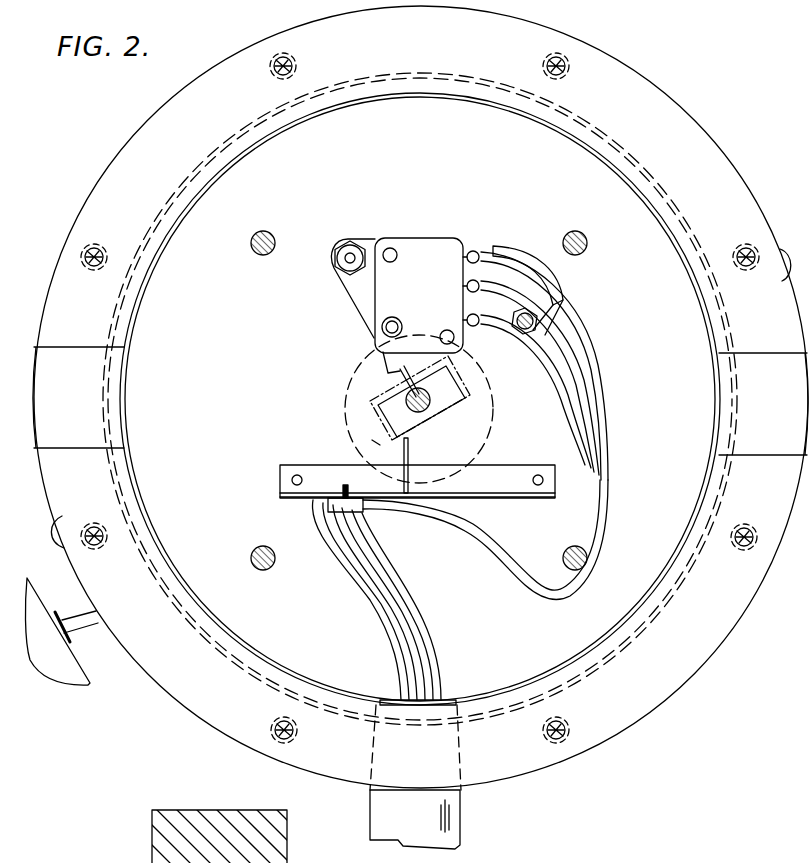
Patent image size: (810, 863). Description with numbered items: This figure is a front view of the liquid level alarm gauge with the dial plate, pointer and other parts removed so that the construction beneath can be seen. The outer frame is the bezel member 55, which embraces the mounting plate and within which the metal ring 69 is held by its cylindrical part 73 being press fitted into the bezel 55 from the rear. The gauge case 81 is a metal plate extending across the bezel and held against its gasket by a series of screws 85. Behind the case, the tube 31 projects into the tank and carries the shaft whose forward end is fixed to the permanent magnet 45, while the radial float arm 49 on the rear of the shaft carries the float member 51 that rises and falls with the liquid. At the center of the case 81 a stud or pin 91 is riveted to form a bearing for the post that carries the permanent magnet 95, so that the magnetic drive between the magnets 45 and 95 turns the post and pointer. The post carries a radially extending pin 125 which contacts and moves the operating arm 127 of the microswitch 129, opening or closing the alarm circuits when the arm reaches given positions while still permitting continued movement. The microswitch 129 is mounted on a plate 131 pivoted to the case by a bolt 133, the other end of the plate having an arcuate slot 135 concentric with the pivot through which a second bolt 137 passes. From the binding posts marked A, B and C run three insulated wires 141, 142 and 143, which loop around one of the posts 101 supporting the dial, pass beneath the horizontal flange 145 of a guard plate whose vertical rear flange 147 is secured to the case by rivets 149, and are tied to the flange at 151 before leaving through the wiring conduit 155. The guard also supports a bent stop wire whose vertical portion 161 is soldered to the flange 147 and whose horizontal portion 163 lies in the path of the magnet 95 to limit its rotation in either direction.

The tube 31 is at (345, 429).
The permanent magnet 45 is at (485, 398).
The radial float arm 49 is at (86, 622).
The float member 51 is at (70, 688).
The bezel member 55 is at (680, 128).
The metal ring 69 is at (356, 94).
The cylindrical part 73 is at (392, 73).
The gauge case 81 is at (662, 486).
The screws 85 is at (282, 54).
The stud or pin 91 is at (430, 403).
The permanent magnet 95 is at (378, 411).
The posts 101 is at (563, 556).
The radially extending pin 125 is at (402, 370).
The operating arm 127 is at (385, 356).
The microswitch 129 is at (428, 241).
The plate 131 is at (357, 298).
The bolt 133 is at (337, 264).
The arcuate slot 135 is at (548, 302).
The bolt 137 is at (545, 332).
The electric wire 141 is at (488, 252).
The electric wire 142 is at (497, 286).
The electric wire 143 is at (490, 327).
The horizontal flange 145 is at (506, 499).
The vertical rear flange 147 is at (515, 466).
The rivets 149 is at (290, 481).
The wire tie 151 is at (350, 509).
The electric wiring conduit 155 is at (378, 818).
The vertical portion 161 is at (409, 446).
The horizontal portion 163 is at (372, 441).